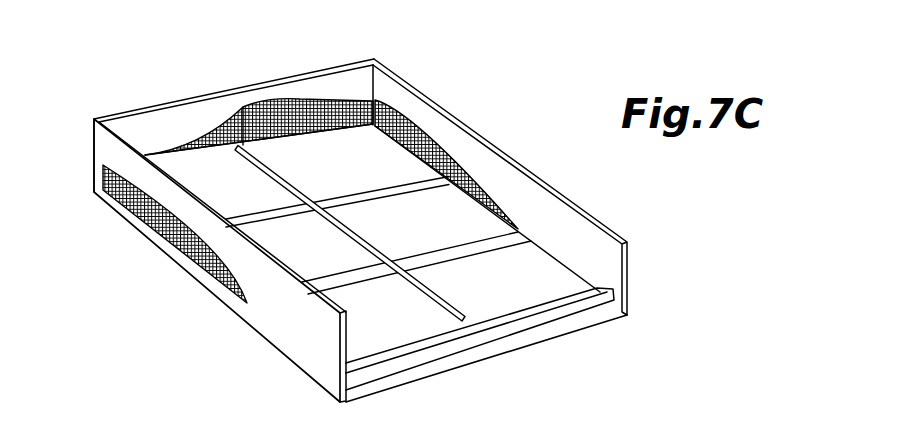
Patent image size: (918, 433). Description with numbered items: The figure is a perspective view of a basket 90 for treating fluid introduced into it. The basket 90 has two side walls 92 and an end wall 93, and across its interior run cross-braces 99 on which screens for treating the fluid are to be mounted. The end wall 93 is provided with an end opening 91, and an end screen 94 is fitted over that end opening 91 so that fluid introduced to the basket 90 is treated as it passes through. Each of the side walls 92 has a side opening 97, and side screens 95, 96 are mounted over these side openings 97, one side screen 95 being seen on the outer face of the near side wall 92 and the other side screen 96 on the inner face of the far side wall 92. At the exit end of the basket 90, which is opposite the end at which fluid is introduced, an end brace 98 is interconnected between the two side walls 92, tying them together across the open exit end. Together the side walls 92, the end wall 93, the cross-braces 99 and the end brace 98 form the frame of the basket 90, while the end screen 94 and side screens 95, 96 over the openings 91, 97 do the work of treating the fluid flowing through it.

The basket 90 is at (230, 315).
The end opening 91 is at (313, 77).
The side walls 92 is at (580, 243).
The end wall 93 is at (149, 126).
The end screen 94 is at (224, 128).
The side screen 95 is at (170, 230).
The side screen 96 is at (397, 112).
The side openings 97 is at (447, 147).
The end brace 98 is at (403, 363).
The cross-braces 99 is at (427, 190).